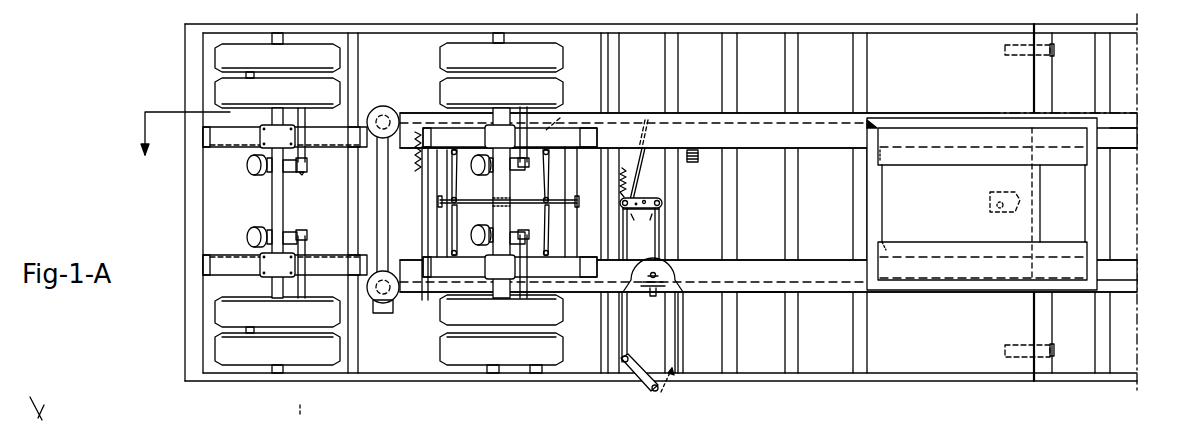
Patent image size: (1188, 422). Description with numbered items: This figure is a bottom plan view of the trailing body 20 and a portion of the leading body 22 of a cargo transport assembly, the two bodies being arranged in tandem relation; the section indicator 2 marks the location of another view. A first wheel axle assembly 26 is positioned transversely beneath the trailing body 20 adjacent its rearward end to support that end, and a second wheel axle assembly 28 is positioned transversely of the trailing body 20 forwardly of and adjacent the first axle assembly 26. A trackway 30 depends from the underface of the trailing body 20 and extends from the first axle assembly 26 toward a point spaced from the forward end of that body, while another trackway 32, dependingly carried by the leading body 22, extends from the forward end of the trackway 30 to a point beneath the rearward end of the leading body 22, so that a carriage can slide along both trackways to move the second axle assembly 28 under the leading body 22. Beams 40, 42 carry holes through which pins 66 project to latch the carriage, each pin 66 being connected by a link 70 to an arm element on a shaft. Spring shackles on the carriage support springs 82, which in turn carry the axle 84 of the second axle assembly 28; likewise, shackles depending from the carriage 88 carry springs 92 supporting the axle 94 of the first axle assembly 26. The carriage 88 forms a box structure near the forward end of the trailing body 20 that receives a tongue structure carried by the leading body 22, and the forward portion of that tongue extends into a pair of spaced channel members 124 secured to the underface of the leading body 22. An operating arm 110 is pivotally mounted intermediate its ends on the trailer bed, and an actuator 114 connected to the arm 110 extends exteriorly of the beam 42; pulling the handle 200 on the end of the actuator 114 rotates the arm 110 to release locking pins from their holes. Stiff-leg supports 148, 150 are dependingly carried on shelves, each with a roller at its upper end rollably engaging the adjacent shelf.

The section line indicator 2 is at (185, 147).
The trailing cargo carrying body 20 is at (1000, 383).
The leading cargo carrying body 22 is at (1093, 384).
The first wheel axle assembly 26 is at (243, 363).
The second wheel axle assembly 28 is at (478, 365).
The trackway 30 is at (763, 298).
The trackway 32 is at (962, 115).
The beam 40 is at (700, 298).
The beam 42 is at (704, 110).
The pin 66 is at (556, 118).
The link 70 is at (545, 172).
The spring 82 is at (555, 268).
The axle 84 is at (497, 186).
The carriage 88 is at (877, 125).
The spring 92 is at (316, 263).
The axle 94 is at (289, 208).
The operating arm 110 is at (665, 200).
The actuator 114 is at (627, 345).
The channel member 124 is at (1128, 142).
The support 148 is at (387, 306).
The support 150 is at (386, 105).
The handle 200 is at (652, 390).